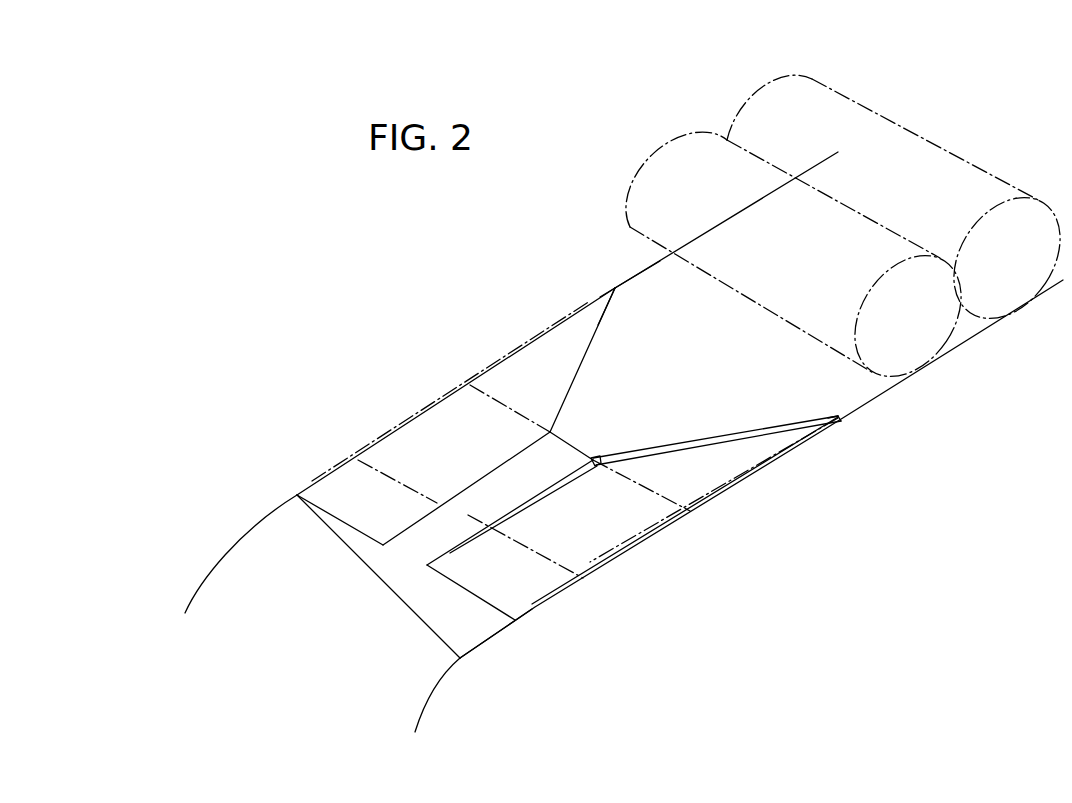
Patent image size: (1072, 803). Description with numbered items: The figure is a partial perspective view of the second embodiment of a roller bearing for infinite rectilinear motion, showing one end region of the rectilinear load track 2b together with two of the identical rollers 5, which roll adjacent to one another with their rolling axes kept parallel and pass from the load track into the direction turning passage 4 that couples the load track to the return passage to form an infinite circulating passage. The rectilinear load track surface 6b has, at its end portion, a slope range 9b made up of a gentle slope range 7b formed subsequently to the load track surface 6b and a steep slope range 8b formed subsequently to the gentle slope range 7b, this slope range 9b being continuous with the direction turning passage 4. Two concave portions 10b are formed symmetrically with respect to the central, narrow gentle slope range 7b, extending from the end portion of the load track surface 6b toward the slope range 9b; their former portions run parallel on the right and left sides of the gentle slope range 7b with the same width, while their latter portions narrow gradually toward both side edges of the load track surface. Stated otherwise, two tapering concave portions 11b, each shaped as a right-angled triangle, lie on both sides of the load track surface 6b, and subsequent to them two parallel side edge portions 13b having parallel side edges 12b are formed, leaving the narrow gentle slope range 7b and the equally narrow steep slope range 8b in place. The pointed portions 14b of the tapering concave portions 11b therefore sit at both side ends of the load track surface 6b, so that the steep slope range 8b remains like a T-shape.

The rectilinear load track 2b is at (633, 265).
The direction turning passage 4 is at (215, 593).
The roller 5 is at (672, 173).
The load track surface 6b is at (630, 305).
The gentle slope range 7b is at (507, 502).
The steep slope range 8b is at (487, 627).
The slope range 9b is at (643, 633).
The concave portion 10b is at (462, 410).
The tapering concave portion 11b is at (547, 360).
The parallel side edge 12b is at (455, 493).
The parallel side edge portion 13b is at (347, 490).
The pointed portion 14b is at (615, 288).